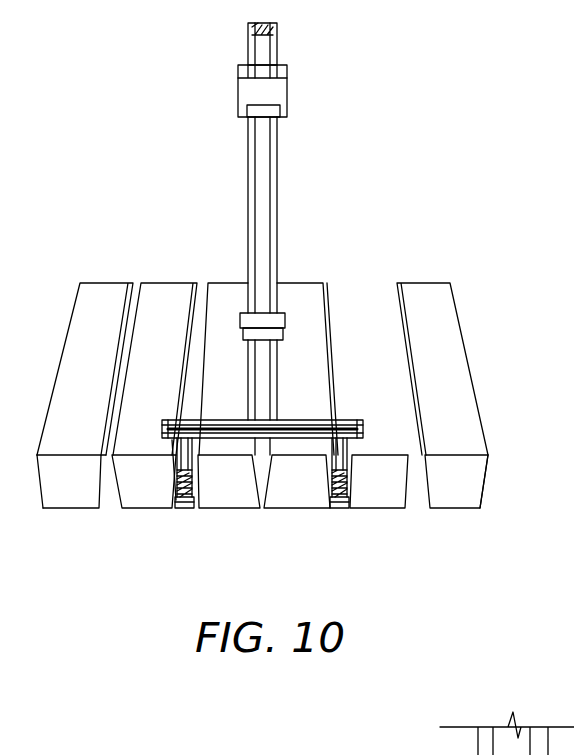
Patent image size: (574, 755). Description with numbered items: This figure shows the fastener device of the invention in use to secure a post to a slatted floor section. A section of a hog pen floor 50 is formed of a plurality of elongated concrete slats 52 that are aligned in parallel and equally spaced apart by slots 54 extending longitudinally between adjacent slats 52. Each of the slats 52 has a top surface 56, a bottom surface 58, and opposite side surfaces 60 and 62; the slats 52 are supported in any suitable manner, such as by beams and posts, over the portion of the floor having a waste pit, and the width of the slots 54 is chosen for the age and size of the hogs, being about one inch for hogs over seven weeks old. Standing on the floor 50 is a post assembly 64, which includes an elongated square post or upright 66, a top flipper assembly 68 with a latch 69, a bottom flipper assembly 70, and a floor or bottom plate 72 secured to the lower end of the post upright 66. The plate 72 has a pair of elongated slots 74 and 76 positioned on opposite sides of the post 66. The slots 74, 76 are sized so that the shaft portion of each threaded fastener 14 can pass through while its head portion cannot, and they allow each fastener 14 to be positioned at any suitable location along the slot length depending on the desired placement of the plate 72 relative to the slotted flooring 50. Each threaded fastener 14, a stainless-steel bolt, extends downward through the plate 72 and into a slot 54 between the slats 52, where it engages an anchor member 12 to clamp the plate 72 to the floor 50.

The anchor member 12 is at (183, 509).
The threaded fastener 14 is at (186, 471).
The hog pen floor 50 is at (216, 249).
The concrete slats 52 is at (413, 300).
The slots 54 is at (103, 496).
The top surface 56 is at (78, 330).
The bottom surface 58 is at (143, 511).
The side surface 60 is at (38, 482).
The side surface 62 is at (487, 479).
The post assembly 64 is at (229, 154).
The post upright 66 is at (276, 200).
The top flipper assembly 68 is at (283, 94).
The latch 69 is at (253, 52).
The bottom flipper assembly 70 is at (243, 323).
The bottom plate 72 is at (165, 421).
The elongated slot 74 is at (223, 420).
The elongated slot 76 is at (303, 426).